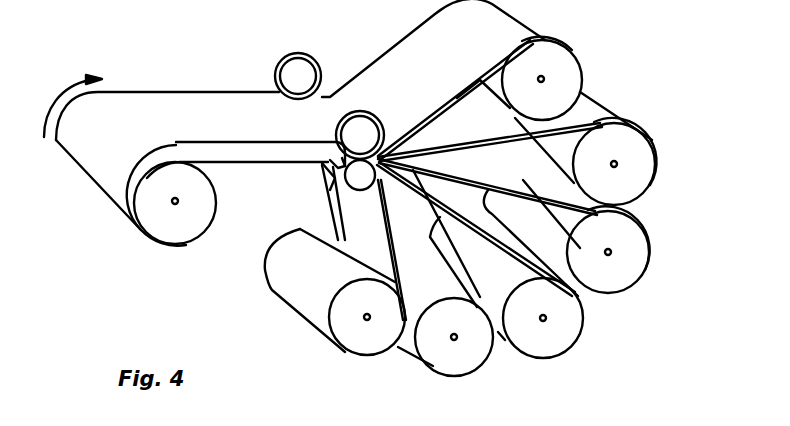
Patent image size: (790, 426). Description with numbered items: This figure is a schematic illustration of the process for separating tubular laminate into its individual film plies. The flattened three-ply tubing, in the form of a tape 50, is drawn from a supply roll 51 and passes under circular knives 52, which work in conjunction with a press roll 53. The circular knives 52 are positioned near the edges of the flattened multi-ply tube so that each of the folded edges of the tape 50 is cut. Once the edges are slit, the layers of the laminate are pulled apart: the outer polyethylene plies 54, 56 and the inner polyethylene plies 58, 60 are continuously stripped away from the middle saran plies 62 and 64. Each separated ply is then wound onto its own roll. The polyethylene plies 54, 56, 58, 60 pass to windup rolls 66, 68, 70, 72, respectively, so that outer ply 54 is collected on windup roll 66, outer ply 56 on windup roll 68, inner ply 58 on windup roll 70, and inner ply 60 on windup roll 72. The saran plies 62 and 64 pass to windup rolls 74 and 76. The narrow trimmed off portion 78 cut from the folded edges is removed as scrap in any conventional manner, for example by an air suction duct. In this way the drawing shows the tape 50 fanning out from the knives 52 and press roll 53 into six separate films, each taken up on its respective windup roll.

The tape 50 is at (212, 99).
The supply roll 51 is at (178, 233).
The circular knives 52 is at (325, 58).
The press roll 53 is at (329, 202).
The outer polyethylene ply 54 is at (470, 80).
The outer polyethylene ply 56 is at (386, 235).
The inner polyethylene ply 58 is at (645, 228).
The inner polyethylene ply 60 is at (578, 296).
The middle saran ply 62 is at (650, 144).
The middle saran ply 64 is at (497, 336).
The windup roll 66 is at (583, 80).
The windup roll 68 is at (366, 343).
The windup roll 70 is at (632, 265).
The windup roll 72 is at (556, 326).
The windup roll 74 is at (645, 178).
The windup roll 76 is at (453, 358).
The trimmed off portion 78 is at (325, 170).